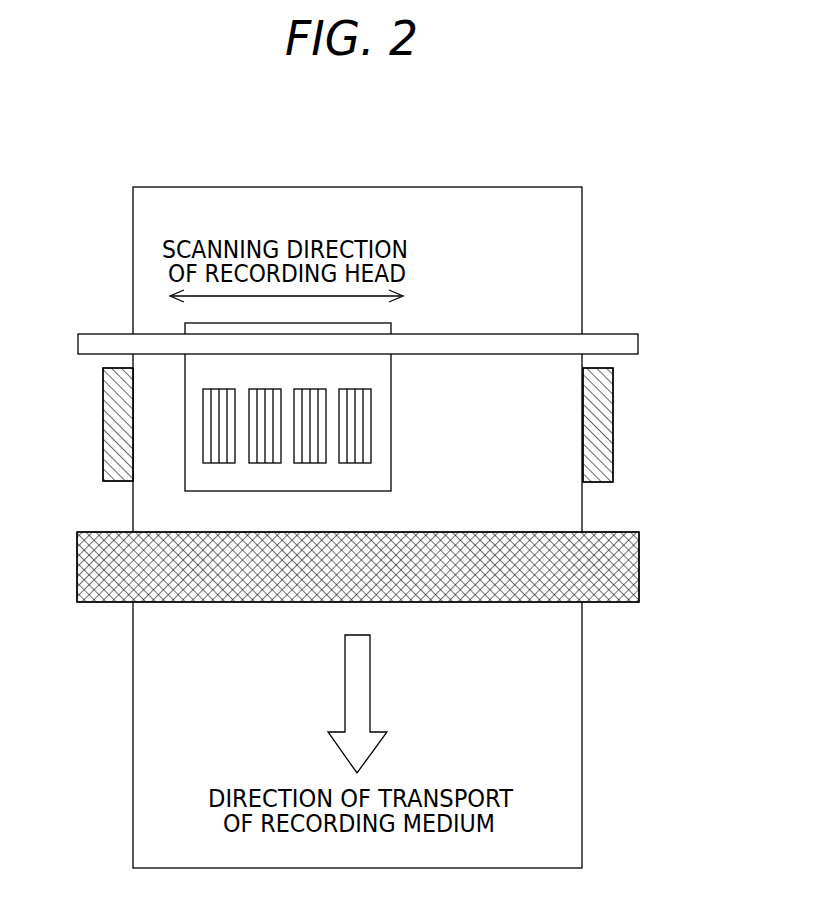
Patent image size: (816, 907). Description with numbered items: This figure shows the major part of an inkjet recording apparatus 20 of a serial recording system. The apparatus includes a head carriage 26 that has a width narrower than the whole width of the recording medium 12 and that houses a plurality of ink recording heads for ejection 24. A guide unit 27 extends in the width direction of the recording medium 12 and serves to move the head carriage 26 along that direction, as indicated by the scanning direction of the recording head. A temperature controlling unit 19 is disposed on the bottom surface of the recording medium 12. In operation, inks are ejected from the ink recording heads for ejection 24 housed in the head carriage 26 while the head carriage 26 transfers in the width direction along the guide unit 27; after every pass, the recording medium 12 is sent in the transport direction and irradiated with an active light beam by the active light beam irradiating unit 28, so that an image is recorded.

The recording medium 12 is at (473, 215).
The temperature controlling unit 19 is at (605, 423).
The inkjet recording apparatus 20 is at (700, 157).
The ink recording heads for ejection 24 is at (207, 428).
The head carriage 26 is at (207, 482).
The guide unit 27 is at (610, 343).
The active light beam irradiating unit 28 is at (617, 603).